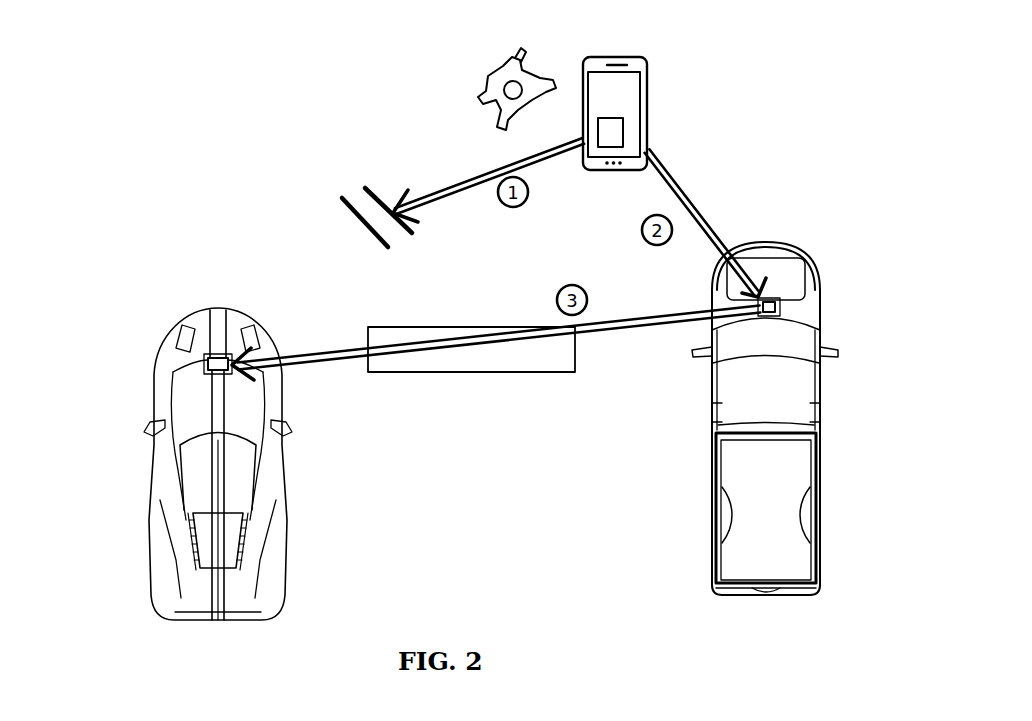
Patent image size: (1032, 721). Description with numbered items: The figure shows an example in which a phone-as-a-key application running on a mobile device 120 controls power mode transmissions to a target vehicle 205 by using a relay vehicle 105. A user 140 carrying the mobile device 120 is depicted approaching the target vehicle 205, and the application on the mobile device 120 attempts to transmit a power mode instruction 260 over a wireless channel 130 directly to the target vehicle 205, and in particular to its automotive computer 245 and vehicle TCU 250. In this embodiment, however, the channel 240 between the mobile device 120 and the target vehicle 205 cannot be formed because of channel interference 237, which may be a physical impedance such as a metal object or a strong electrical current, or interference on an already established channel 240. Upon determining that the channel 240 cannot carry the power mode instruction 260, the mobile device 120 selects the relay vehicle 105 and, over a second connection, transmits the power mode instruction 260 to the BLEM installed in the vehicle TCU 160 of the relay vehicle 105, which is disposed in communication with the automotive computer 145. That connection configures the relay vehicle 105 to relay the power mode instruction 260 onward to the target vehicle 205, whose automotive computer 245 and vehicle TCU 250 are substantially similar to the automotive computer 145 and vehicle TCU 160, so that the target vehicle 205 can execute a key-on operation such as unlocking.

The relay vehicle 105 is at (783, 243).
The mobile device 120 is at (617, 55).
The wireless channel 130 is at (610, 134).
The user 140 is at (495, 70).
The automotive computer 145 is at (780, 303).
The vehicle TCU 160 is at (777, 305).
The target vehicle 205 is at (220, 305).
The channel interference 237 is at (342, 198).
The channel 240 is at (483, 182).
The automotive computer 245 is at (207, 362).
The vehicle TCU 250 is at (207, 368).
The power mode instruction 260 is at (459, 366).